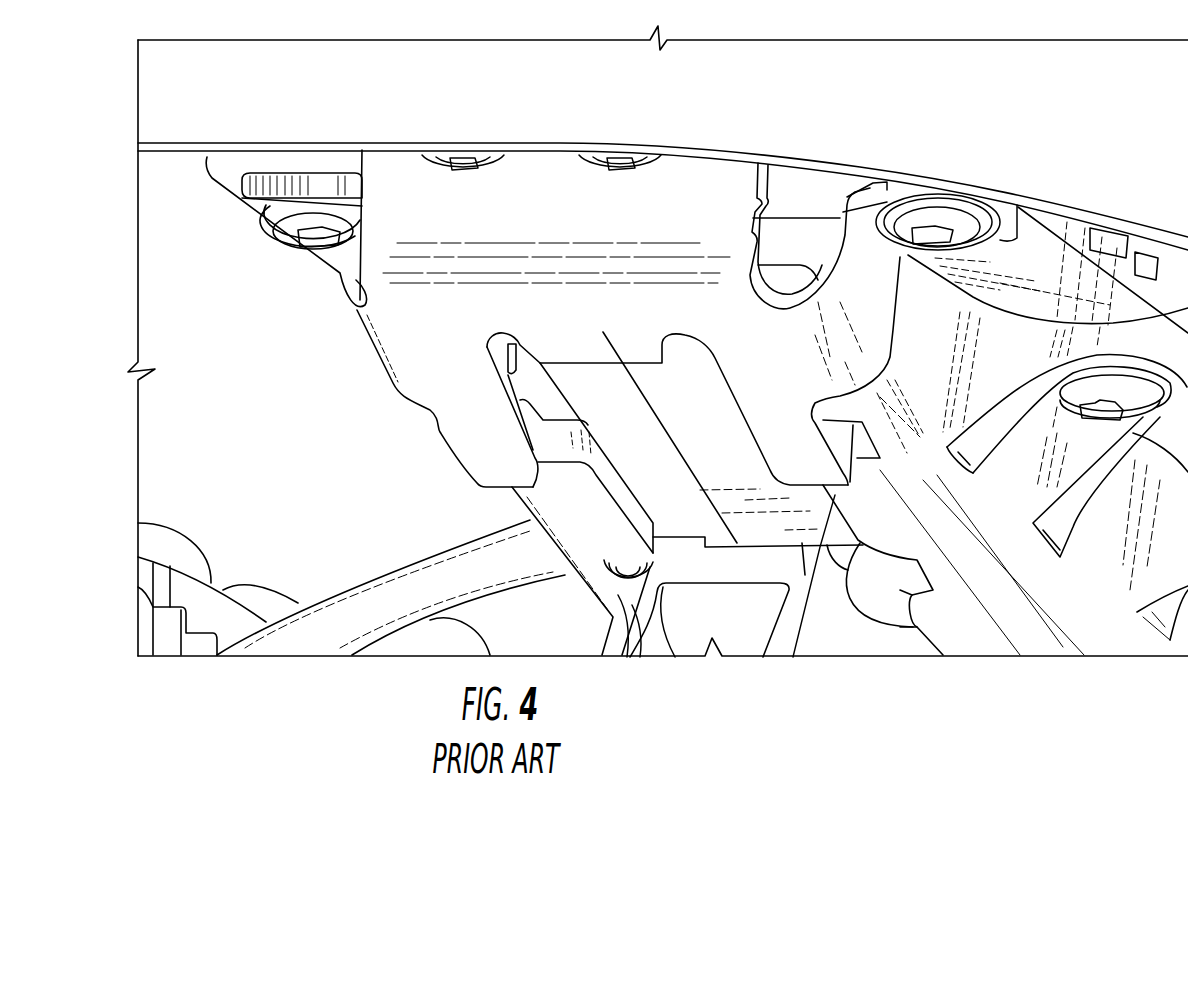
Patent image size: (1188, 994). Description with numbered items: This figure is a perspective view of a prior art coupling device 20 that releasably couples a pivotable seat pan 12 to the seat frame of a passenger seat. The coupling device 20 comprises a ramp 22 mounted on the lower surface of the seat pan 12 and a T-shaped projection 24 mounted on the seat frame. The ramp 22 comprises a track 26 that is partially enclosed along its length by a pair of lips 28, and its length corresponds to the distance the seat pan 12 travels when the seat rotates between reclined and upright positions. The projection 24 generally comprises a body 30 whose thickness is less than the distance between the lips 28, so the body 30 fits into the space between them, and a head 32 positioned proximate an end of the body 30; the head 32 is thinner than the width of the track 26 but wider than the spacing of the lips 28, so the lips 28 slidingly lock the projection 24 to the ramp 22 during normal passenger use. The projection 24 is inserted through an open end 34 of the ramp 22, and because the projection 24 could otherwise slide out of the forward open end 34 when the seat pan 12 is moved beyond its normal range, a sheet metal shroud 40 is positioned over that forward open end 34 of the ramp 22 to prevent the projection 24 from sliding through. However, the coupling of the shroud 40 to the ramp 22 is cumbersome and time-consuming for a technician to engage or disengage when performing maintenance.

The seat pan 12 is at (780, 80).
The coupling device 20 is at (925, 395).
The ramp 22 is at (988, 513).
The T-shaped projection 24 is at (675, 657).
The track 26 is at (660, 383).
The pair of lips 28 is at (863, 543).
The body 30 is at (657, 603).
The head 32 is at (802, 543).
The open end 34 is at (812, 257).
The sheet metal shroud 40 is at (600, 253).